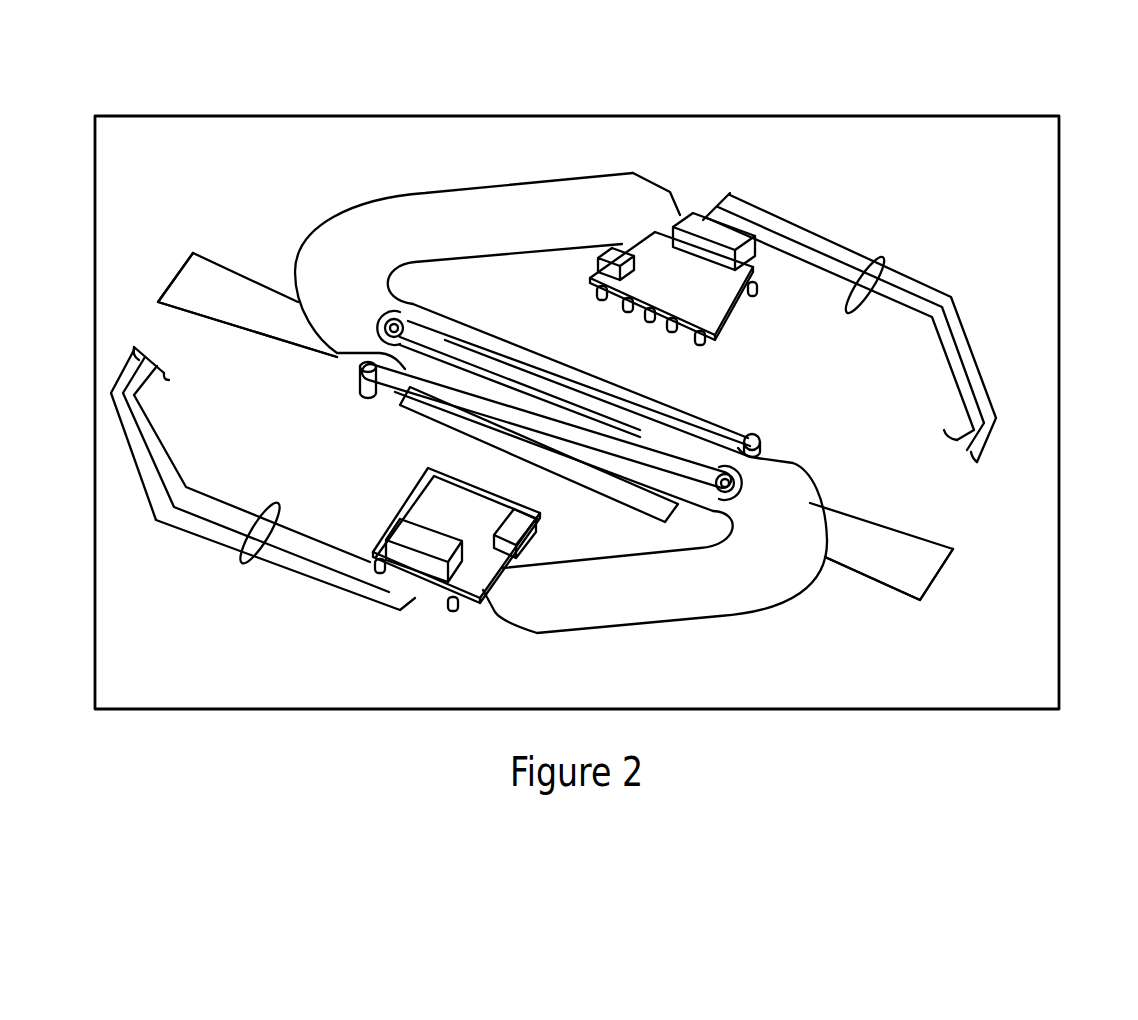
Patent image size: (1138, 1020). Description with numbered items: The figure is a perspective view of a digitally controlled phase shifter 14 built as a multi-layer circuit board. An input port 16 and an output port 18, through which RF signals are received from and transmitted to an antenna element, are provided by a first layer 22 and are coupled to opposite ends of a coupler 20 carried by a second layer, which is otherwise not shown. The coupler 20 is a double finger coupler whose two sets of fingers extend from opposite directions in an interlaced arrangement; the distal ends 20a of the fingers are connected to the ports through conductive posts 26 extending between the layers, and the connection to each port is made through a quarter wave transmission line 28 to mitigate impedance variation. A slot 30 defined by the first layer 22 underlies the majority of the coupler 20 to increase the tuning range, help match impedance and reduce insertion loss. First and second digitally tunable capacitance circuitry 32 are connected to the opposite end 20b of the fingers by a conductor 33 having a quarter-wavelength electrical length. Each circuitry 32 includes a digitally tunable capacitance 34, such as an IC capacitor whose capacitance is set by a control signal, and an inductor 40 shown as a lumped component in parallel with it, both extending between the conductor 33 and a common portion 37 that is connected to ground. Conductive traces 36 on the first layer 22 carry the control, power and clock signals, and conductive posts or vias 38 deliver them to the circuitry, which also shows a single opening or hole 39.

The digitally controlled phase shifter 14 is at (838, 90).
The input port 16 is at (170, 282).
The output port 18 is at (950, 575).
The coupler 20 is at (581, 409).
The distal ends of the fingers 20a is at (405, 318).
The end of the fingers 20b is at (450, 335).
The first layer 22 is at (1030, 262).
The conductive posts 26 is at (358, 398).
The quarter wave transmission line 28 is at (258, 330).
The slot 30 is at (600, 485).
The digitally tunable capacitance circuitry 32 is at (539, 414).
The conductor 33 is at (473, 213).
The digitally tunable capacitance 34 is at (697, 240).
The conductive traces 36 is at (875, 255).
The common portion 37 is at (723, 312).
The conductive posts or vias 38 is at (372, 583).
The opening or hole 39 is at (570, 403).
The inductor 40 is at (597, 264).